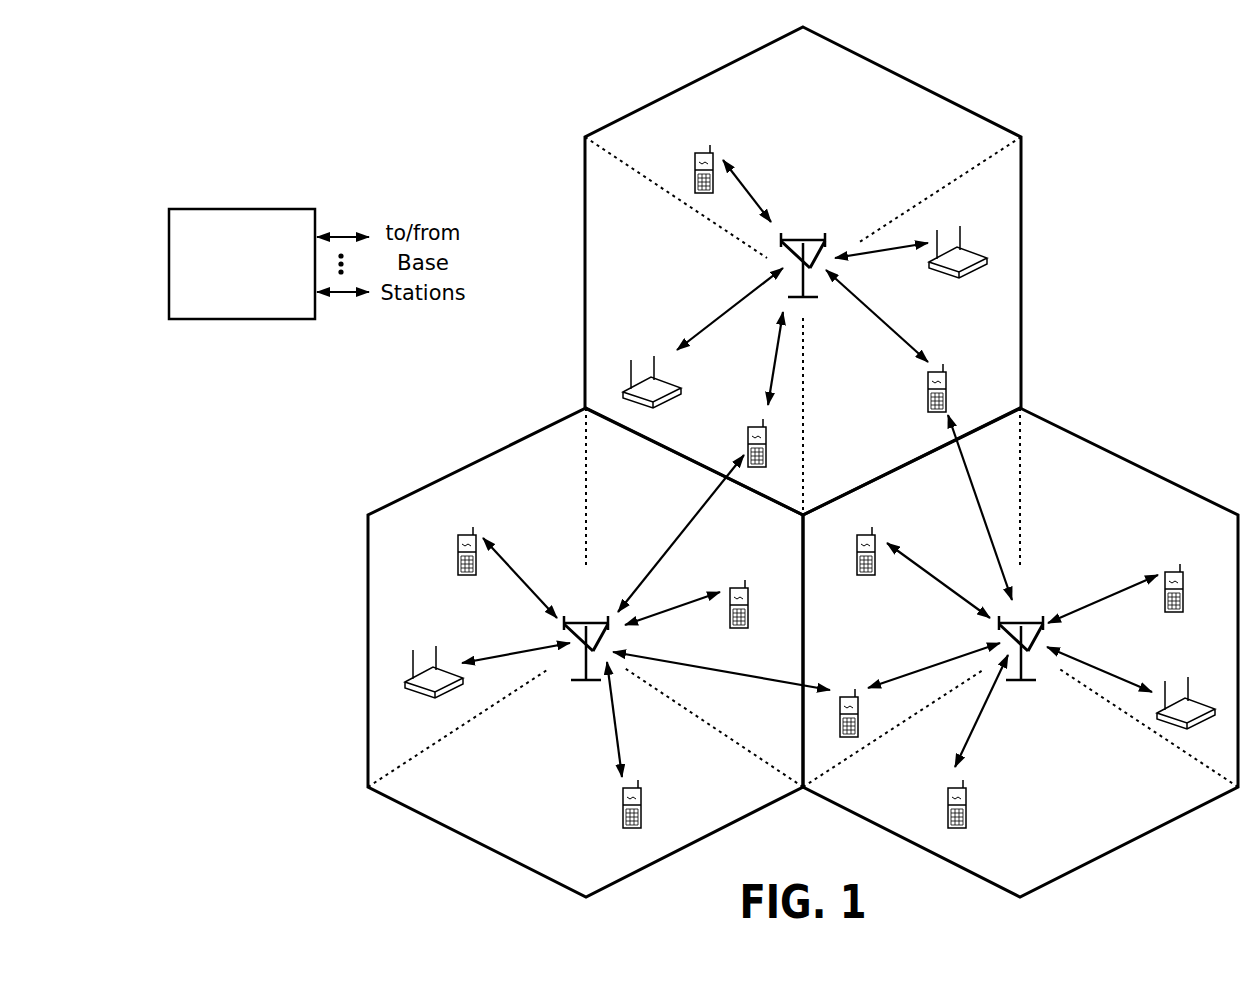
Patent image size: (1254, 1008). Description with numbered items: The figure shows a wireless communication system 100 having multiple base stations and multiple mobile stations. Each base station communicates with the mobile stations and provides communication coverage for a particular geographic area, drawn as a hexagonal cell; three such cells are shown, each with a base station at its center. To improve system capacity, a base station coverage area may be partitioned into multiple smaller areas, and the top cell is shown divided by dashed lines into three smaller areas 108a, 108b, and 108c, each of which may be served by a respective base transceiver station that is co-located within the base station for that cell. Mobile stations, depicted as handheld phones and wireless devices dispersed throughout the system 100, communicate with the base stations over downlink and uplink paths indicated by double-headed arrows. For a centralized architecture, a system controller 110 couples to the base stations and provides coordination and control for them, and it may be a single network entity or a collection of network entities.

The wireless communication system 100 is at (1174, 95).
The smaller area 108a is at (825, 86).
The smaller area 108b is at (645, 243).
The smaller area 108c is at (899, 451).
The system controller 110 is at (238, 209).